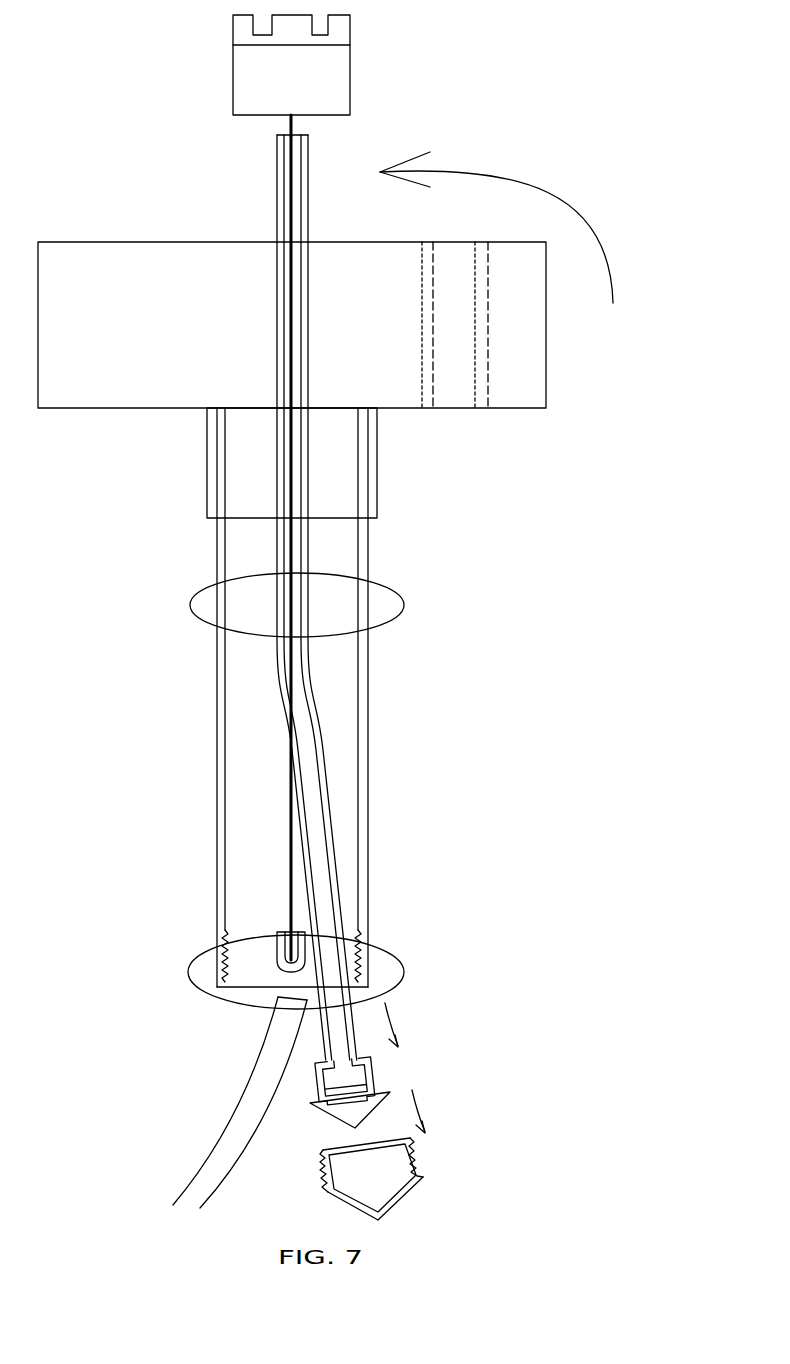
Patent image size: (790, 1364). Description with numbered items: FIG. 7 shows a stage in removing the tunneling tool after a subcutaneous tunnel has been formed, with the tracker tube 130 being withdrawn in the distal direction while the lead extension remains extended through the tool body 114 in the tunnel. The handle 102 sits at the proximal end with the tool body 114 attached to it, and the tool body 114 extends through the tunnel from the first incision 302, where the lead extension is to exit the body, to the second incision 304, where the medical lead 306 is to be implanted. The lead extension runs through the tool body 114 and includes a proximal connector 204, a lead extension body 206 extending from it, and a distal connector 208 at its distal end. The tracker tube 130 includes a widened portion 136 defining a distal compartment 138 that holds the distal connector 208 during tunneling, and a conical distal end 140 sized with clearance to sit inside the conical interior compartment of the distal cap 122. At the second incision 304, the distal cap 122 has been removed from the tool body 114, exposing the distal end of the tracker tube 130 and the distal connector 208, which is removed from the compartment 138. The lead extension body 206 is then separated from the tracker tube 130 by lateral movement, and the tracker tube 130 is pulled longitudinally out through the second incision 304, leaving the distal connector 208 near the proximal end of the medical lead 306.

The handle 102 is at (104, 241).
The tool body 114 is at (216, 722).
The distal cap 122 is at (417, 1197).
The tracker tube 130 is at (309, 210).
The widened portion 136 is at (318, 1081).
The distal compartment 138 is at (352, 1076).
The conical distal end 140 is at (340, 1113).
The proximal connector 204 is at (350, 66).
The lead extension body 206 is at (294, 123).
The distal connector 208 is at (273, 957).
The first incision 302 is at (404, 598).
The second incision 304 is at (402, 960).
The medical lead 306 is at (247, 1103).